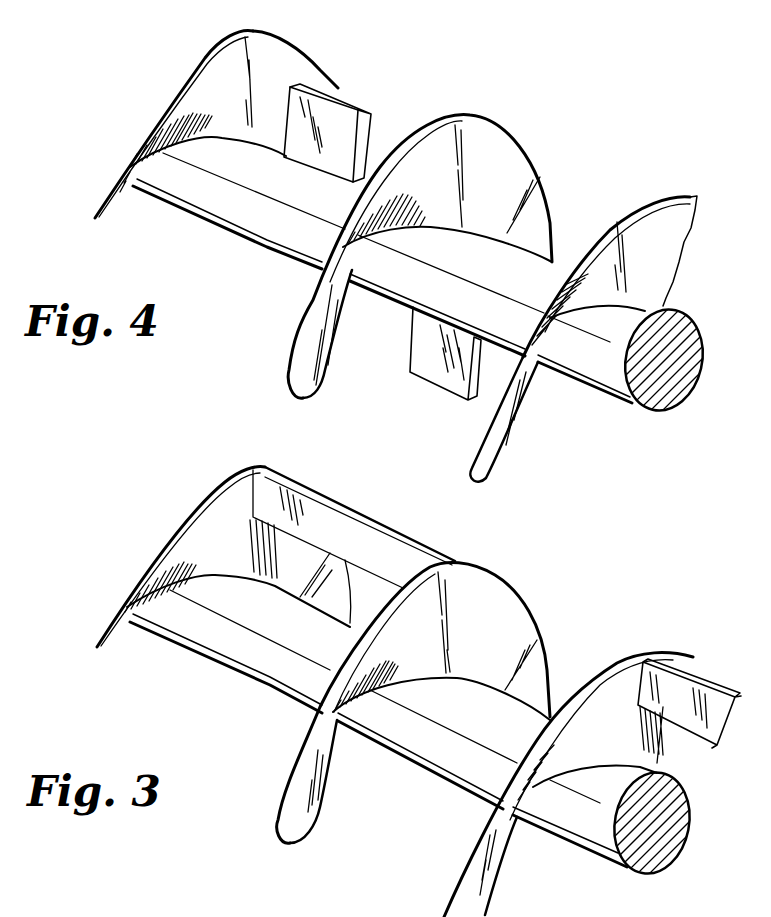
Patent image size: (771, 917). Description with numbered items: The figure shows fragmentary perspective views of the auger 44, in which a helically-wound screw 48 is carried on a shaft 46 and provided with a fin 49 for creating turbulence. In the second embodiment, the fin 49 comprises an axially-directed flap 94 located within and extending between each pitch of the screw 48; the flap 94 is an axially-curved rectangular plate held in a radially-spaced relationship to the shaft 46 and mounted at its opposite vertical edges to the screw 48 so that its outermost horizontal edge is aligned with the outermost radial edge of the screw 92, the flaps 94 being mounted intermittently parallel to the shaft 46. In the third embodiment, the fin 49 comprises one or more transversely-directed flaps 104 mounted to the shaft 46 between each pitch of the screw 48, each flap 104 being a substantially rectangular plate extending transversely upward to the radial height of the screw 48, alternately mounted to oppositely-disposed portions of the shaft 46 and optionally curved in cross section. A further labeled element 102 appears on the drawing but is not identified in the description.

In FIG. 4, the auger 44 is at (575, 146).
In FIG. 3, the auger 44 is at (548, 584).
In FIG. 4, the shaft 46 is at (261, 232).
In FIG. 3, the shaft 46 is at (262, 676).
In FIG. 4, the helically-wound screw 48 is at (276, 63).
In FIG. 3, the helically-wound screw 48 is at (180, 503).
In FIG. 4, the fin 49 is at (333, 86).
In FIG. 3, the fin 49 is at (408, 532).
In FIG. 3, the screw 92 is at (114, 594).
In FIG. 3, the axially-directed flap 94 is at (351, 526).
In FIG. 4, the hardened edge of flight 102 is at (180, 84).
In FIG. 4, the transversely-directed flap 104 is at (346, 128).